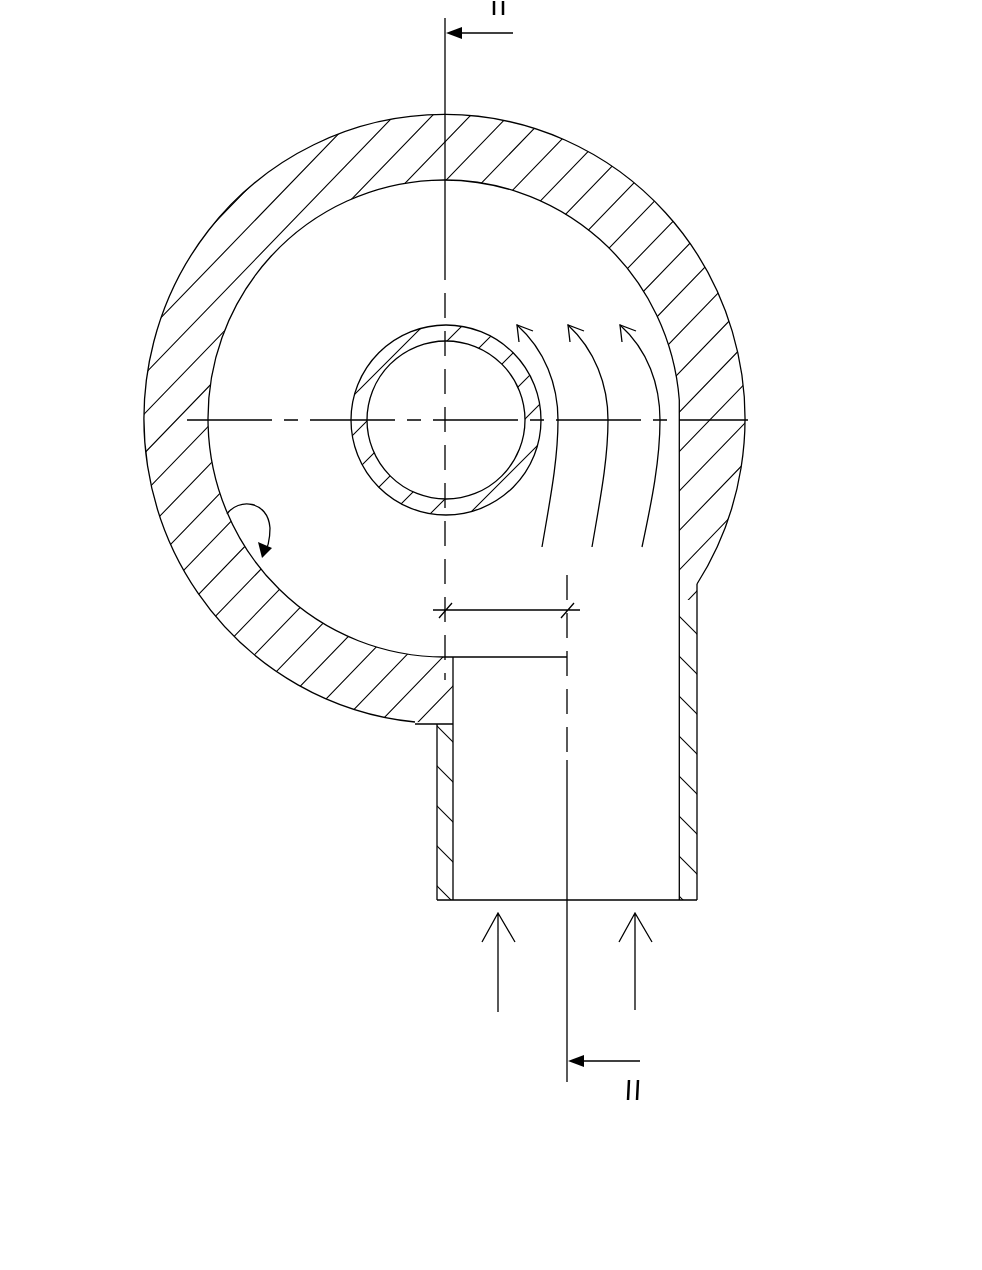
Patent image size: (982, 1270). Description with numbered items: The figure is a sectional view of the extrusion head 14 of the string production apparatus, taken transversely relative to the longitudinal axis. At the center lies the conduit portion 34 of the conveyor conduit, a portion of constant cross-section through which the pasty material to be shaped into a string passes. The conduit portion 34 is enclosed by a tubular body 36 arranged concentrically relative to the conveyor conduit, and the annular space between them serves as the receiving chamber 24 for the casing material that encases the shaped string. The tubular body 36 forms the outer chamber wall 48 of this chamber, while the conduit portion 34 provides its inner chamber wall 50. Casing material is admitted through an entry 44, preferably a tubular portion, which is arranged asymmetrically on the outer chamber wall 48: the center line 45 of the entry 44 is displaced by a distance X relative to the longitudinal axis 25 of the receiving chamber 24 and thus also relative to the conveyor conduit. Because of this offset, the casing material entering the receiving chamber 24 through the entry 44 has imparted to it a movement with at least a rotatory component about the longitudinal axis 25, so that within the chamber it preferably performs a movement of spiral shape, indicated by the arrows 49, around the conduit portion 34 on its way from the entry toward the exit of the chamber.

The extrusion head 14 is at (491, 635).
The receiving chamber 24 is at (491, 578).
The longitudinal axis 25 is at (440, 424).
The conduit portion 34 is at (357, 403).
The tubular body 36 is at (610, 194).
The entry 44 is at (650, 843).
The center line 45 is at (567, 808).
The outer chamber wall 48 is at (227, 514).
The arrows 49 is at (793, 403).
The inner chamber wall 50 is at (491, 635).